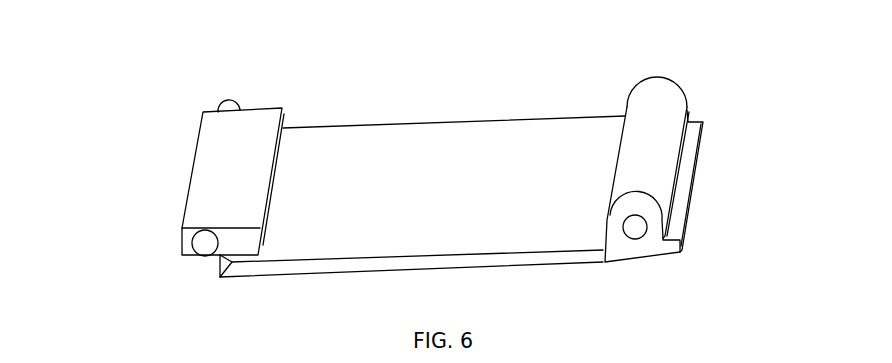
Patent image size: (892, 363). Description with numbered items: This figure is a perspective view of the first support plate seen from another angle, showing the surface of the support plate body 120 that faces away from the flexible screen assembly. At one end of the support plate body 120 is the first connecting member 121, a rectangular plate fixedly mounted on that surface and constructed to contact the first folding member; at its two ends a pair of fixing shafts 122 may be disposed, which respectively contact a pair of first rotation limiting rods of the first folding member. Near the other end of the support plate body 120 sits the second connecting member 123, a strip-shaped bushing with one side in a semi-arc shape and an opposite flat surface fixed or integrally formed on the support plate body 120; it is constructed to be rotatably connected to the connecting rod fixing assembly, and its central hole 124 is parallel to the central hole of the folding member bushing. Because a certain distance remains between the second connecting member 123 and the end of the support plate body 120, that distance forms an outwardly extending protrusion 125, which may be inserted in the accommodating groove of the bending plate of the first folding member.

The support plate body 120 is at (452, 128).
The first connecting member 121 is at (215, 180).
The fixing shaft 122 is at (207, 245).
The second connecting member 123 is at (660, 165).
The central hole 124 is at (643, 230).
The protrusion 125 is at (678, 217).